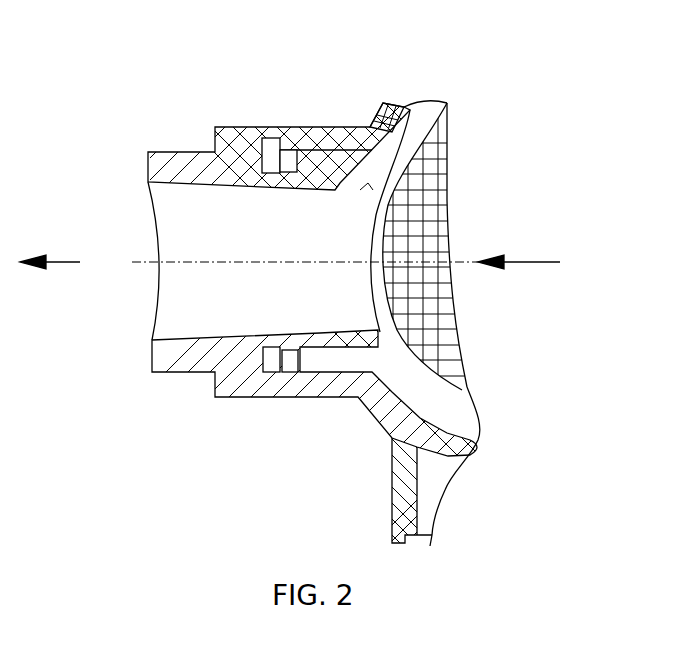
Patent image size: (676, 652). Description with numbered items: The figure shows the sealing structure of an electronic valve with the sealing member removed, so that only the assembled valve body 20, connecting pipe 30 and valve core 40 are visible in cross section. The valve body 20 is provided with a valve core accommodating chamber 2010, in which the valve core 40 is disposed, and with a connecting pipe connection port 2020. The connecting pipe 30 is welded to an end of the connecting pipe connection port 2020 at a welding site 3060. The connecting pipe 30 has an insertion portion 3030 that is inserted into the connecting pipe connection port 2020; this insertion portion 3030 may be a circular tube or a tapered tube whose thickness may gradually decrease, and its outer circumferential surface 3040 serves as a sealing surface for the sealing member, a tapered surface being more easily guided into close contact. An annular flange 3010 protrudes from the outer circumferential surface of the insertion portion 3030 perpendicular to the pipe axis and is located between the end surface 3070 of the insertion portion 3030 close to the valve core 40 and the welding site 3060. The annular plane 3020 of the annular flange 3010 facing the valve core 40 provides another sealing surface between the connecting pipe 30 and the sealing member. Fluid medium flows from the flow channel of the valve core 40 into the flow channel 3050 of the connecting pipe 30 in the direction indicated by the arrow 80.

The connecting pipe connection port 2020 is at (250, 128).
The welding site 3060 is at (234, 130).
The annular flange 3010 is at (287, 152).
The annular plane 3020 is at (302, 152).
The insertion portion 3030 is at (340, 155).
The outer circumferential surface 3040 is at (395, 107).
The end surface 3070 is at (423, 143).
The valve core accommodating chamber 2010 is at (430, 142).
The flow channel 3050 is at (212, 228).
The connecting pipe 30 is at (194, 362).
The valve body 20 is at (312, 383).
The valve core 40 is at (430, 332).
The arrow 80 is at (290, 248).